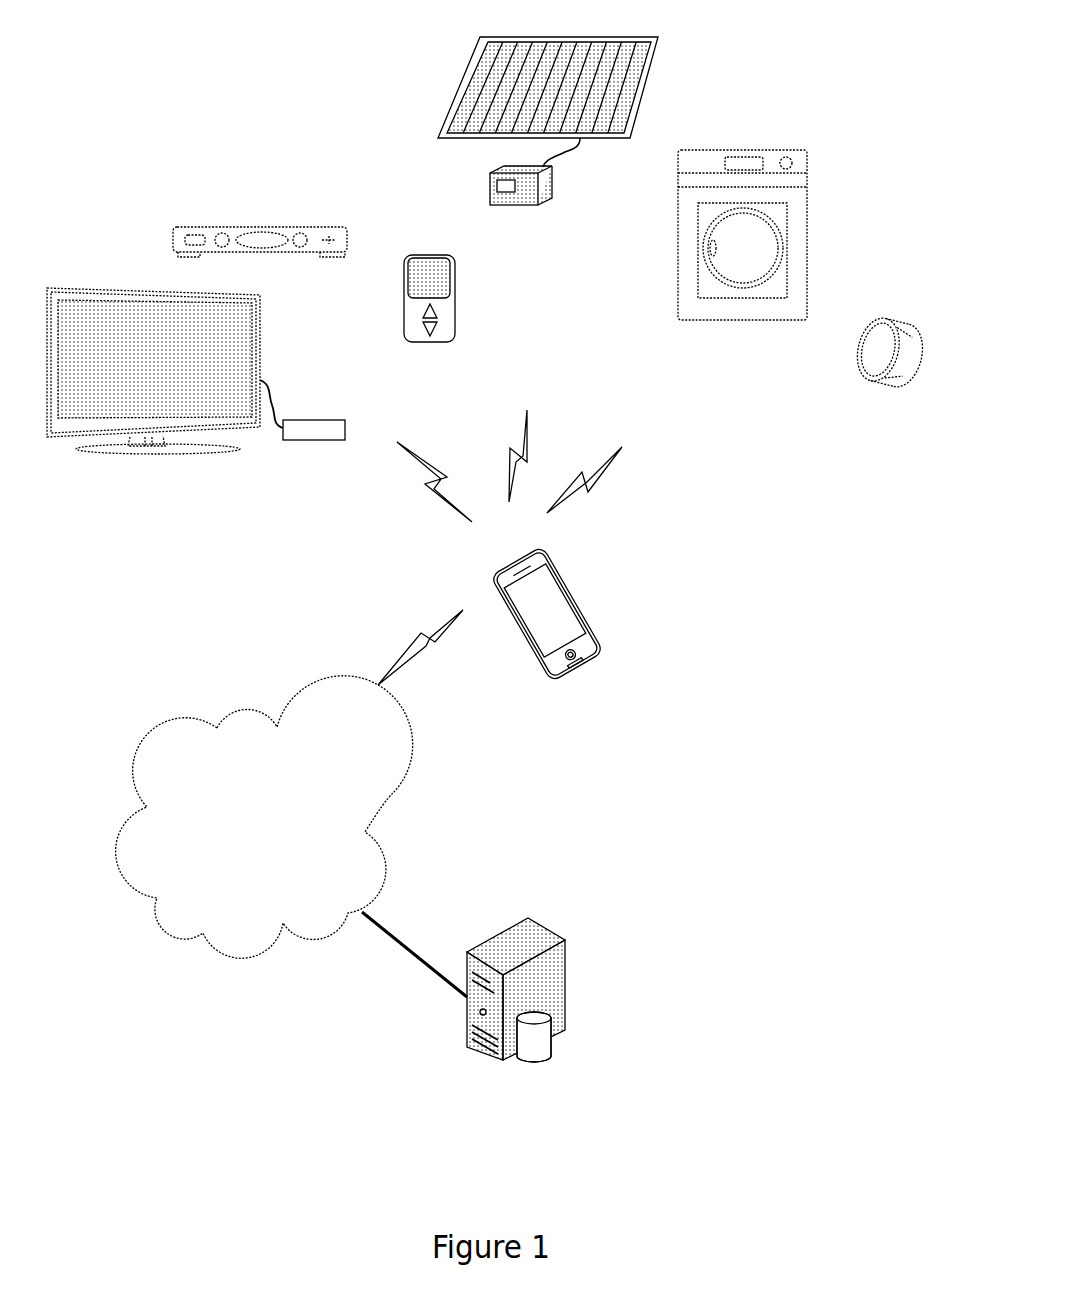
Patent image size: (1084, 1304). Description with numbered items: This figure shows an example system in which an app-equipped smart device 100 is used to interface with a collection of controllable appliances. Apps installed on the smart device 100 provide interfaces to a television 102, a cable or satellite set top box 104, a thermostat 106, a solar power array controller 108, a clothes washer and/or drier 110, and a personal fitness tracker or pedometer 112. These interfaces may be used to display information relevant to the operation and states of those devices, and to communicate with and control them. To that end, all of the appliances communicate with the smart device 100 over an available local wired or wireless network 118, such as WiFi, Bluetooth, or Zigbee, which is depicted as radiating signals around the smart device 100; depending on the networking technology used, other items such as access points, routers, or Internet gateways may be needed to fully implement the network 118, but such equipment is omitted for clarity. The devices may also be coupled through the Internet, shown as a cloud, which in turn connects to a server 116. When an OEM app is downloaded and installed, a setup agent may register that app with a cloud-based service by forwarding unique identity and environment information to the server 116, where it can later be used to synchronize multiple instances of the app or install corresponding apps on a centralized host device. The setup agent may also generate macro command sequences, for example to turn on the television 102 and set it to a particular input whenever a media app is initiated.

The smart device 100 is at (608, 648).
The television 102 is at (137, 292).
The cable or satellite set top box 104 is at (268, 224).
The thermostat 106 is at (428, 253).
The solar power array controller 108 is at (567, 185).
The clothes washer and/or drier 110 is at (750, 150).
The personal fitness tracker or pedometer 112 is at (882, 320).
The server 116 is at (558, 1032).
The local wired or wireless network 118 is at (658, 483).